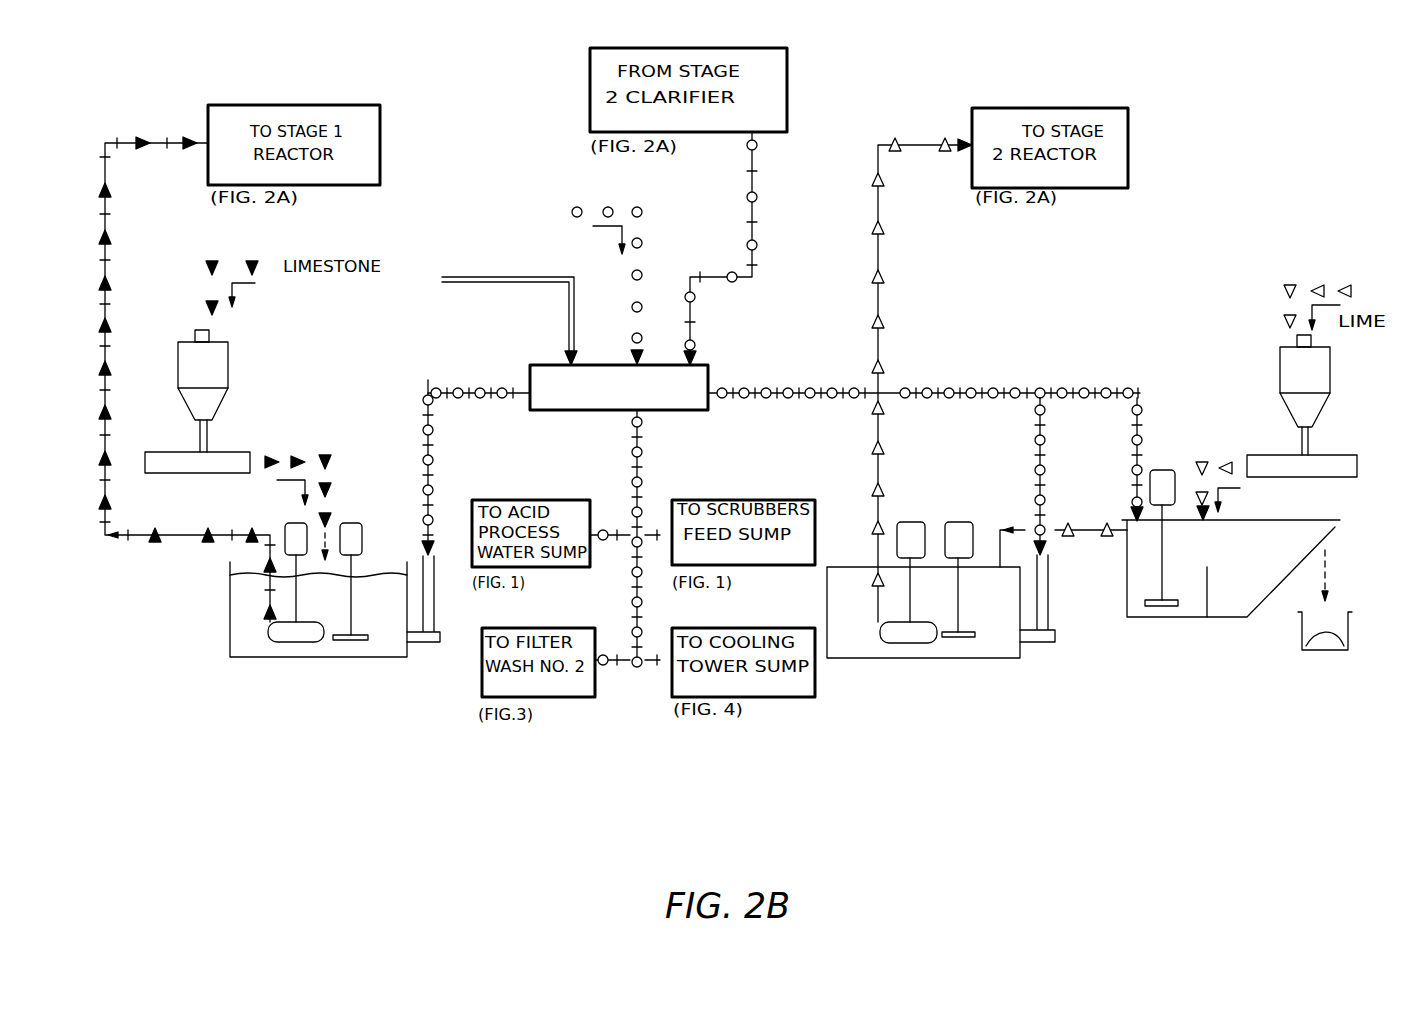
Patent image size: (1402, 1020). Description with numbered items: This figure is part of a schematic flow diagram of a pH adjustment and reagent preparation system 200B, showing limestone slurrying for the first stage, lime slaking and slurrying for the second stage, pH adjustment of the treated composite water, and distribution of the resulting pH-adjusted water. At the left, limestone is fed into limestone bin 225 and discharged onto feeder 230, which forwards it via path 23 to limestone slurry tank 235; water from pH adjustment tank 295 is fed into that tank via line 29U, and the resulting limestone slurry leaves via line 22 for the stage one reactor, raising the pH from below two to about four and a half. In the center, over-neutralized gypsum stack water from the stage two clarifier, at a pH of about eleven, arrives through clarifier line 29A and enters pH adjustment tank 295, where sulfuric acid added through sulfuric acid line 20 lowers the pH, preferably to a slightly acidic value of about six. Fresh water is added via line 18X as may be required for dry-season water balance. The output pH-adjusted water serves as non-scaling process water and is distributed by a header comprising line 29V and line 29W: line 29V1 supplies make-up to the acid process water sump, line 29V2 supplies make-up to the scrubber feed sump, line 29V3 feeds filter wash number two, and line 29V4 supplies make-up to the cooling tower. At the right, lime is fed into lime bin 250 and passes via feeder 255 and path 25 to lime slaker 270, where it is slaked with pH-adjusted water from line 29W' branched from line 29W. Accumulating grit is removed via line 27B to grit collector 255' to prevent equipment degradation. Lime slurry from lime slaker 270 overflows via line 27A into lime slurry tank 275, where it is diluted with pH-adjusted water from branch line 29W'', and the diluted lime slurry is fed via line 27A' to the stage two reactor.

The fresh water line 18X is at (645, 222).
The sulfuric acid feed line 20 is at (556, 284).
The limestone slurry line 22 is at (112, 468).
The limestone feed path 23 is at (328, 505).
The lime feed path 25 is at (1230, 464).
The lime slurry overflow line 27A is at (1088, 550).
The diluted lime slurry line 27A' is at (901, 368).
The grit removal line 27B is at (1328, 562).
The clarifier overflow line (pH 11.0) 29A is at (695, 300).
The water line 29U is at (428, 380).
The process water distribution line 29V is at (632, 447).
The make-up line to acid process water sump 29V1 is at (614, 527).
The make-up line to scrubber feed sump 29V2 is at (657, 530).
The filter wash line 29V3 is at (614, 655).
The make-up line to cooling tower 29V4 is at (657, 655).
The pH-adjusted water line 29W is at (784, 371).
The branch line to lime slaker 29W' is at (1107, 459).
The branch line to lime slurry tank 29W'' is at (1002, 476).
The pH adjustment and reagent preparation system 200B is at (1153, 322).
The limestone bin 225 is at (228, 390).
The feeder 230 is at (250, 462).
The limestone slurry tank 235 is at (230, 648).
The lime bin 250 is at (1330, 378).
The feeder 255 is at (1302, 482).
The grit collector 255' is at (1348, 641).
The lime slaker 270 is at (1250, 620).
The lime slurry tank 275 is at (1022, 655).
The pH adjustment tank 295 is at (708, 378).